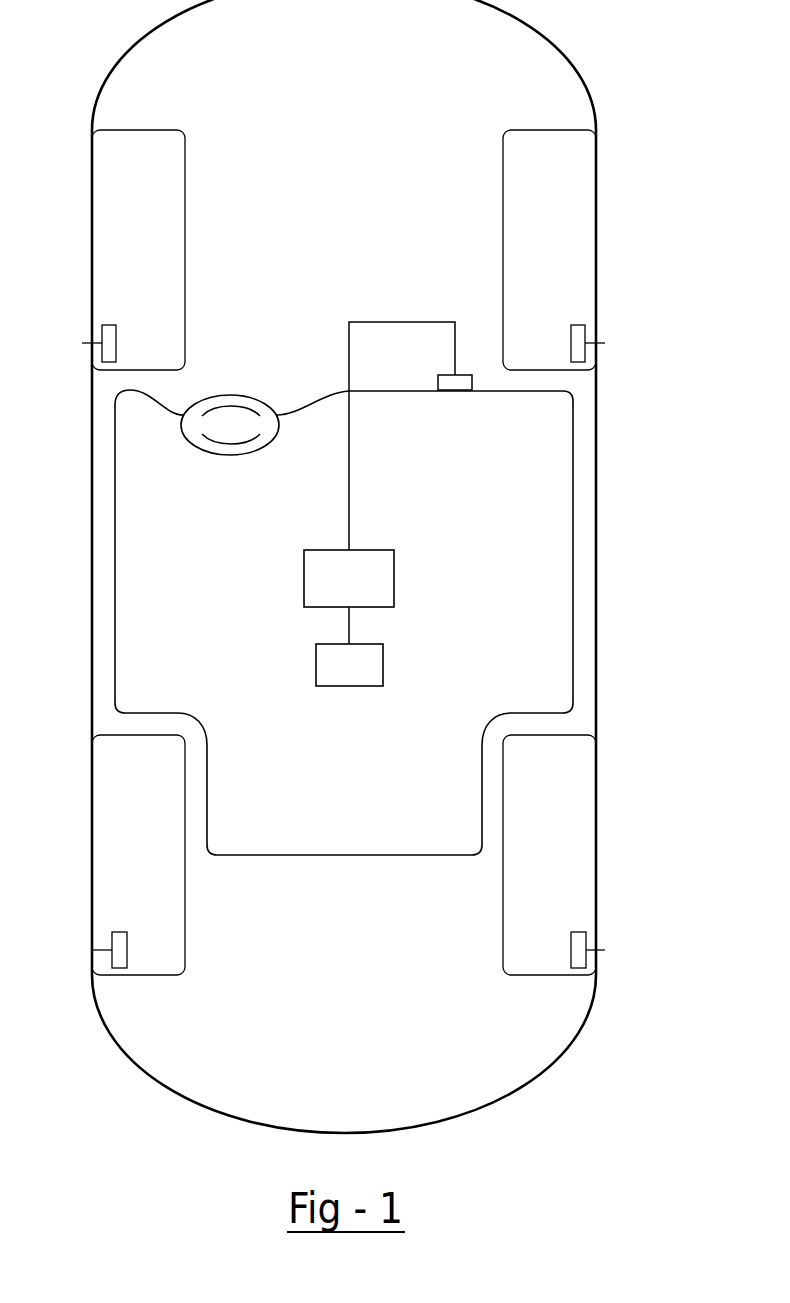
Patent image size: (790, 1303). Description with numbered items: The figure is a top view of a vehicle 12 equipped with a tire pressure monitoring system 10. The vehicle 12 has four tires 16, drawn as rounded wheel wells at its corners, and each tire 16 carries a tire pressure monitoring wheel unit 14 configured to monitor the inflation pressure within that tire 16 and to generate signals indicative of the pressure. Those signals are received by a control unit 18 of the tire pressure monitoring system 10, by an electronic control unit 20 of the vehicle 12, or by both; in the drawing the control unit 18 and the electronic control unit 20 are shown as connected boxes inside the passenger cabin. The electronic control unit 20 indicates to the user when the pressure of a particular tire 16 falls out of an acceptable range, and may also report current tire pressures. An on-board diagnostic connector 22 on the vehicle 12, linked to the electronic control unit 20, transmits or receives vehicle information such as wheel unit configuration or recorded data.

The tire pressure monitoring system 10 is at (636, 545).
The vehicle 12 is at (550, 40).
The tire pressure monitoring wheel unit 14 is at (116, 343).
The tire 16 is at (105, 215).
The control unit 18 is at (316, 665).
The electronic control unit 20 is at (304, 578).
The on-board diagnostic connector 22 is at (453, 392).